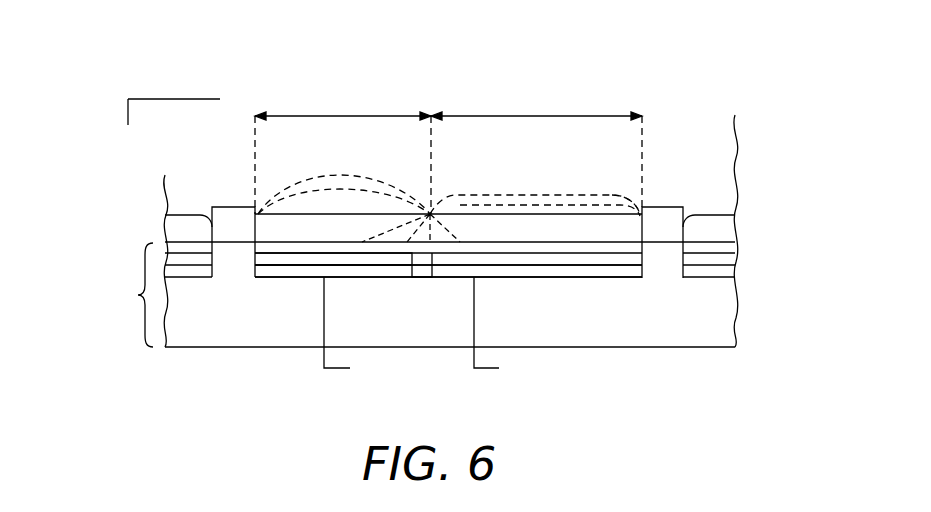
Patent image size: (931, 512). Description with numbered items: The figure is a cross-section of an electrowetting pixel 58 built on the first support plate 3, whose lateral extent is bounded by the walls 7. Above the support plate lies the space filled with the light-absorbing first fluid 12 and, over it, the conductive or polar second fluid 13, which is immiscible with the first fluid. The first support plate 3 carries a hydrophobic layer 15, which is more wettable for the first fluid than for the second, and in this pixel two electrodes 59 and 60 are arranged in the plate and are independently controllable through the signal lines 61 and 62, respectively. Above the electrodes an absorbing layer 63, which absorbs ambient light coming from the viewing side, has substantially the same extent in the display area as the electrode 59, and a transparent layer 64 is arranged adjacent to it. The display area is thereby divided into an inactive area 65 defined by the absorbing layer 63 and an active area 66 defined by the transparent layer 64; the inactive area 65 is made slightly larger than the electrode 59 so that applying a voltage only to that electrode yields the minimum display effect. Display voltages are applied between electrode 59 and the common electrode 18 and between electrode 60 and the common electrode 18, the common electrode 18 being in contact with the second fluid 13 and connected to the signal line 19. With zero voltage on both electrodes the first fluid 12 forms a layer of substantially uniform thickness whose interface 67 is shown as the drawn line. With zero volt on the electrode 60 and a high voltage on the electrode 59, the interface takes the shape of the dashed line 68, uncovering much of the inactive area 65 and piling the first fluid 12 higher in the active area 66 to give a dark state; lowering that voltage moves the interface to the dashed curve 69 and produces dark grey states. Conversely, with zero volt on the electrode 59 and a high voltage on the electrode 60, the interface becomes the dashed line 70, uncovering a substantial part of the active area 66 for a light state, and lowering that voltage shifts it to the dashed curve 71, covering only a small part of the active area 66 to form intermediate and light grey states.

The first support plate 3 is at (429, 231).
The walls 7 is at (220, 207).
The first fluid 12 is at (722, 229).
The second fluid 13 is at (722, 163).
The hydrophobic layer 15 is at (602, 246).
The common electrode 18 is at (172, 99).
The signal line 19 is at (128, 112).
The pixel 58 is at (438, 79).
The electrode 59 is at (388, 275).
The electrode 60 is at (442, 274).
The signal line 61 is at (340, 372).
The signal line 62 is at (489, 372).
The absorbing layer 63 is at (290, 262).
The transparent layer 64 is at (535, 262).
The inactive area 65 is at (343, 150).
The active area 66 is at (536, 150).
The interface 67 is at (607, 200).
The dashed line 68 is at (562, 205).
The dashed curve 69 is at (519, 195).
The dashed line 70 is at (388, 176).
The dashed curve 71 is at (328, 189).